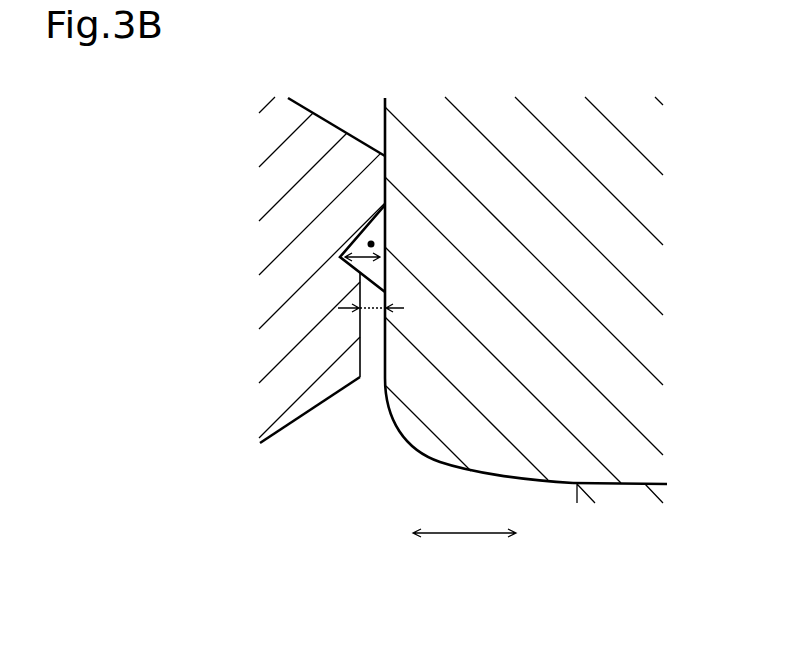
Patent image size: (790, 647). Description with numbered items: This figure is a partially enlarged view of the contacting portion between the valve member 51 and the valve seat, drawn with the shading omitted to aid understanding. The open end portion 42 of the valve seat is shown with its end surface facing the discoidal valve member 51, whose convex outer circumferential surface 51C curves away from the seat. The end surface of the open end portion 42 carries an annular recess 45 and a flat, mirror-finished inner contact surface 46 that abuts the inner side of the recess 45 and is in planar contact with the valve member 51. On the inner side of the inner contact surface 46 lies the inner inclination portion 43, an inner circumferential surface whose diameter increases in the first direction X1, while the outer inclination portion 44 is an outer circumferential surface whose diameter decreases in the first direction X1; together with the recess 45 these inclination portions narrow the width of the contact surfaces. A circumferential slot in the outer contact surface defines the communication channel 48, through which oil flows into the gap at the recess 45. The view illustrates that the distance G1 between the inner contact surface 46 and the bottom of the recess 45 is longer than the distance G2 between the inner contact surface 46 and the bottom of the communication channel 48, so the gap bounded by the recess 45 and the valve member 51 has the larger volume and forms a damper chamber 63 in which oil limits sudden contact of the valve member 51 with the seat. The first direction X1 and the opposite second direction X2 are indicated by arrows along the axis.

The open end portion 42 is at (292, 364).
The inner inclination portion 43 is at (337, 126).
The outer inclination portion 44 is at (310, 412).
The recess 45 is at (385, 238).
The inner contact surface 46 is at (385, 207).
The communication channel 48 is at (360, 338).
The valve member 51 is at (414, 442).
The convex outer circumferential surface 51C is at (513, 478).
The damper chamber 63 is at (369, 241).
The distance between inner contact surface and bottom surface of recess G1 is at (357, 268).
The distance between inner contact surface and bottom surface of communication chann G2 is at (385, 308).
The first direction X1 is at (506, 534).
The second direction X2 is at (422, 534).